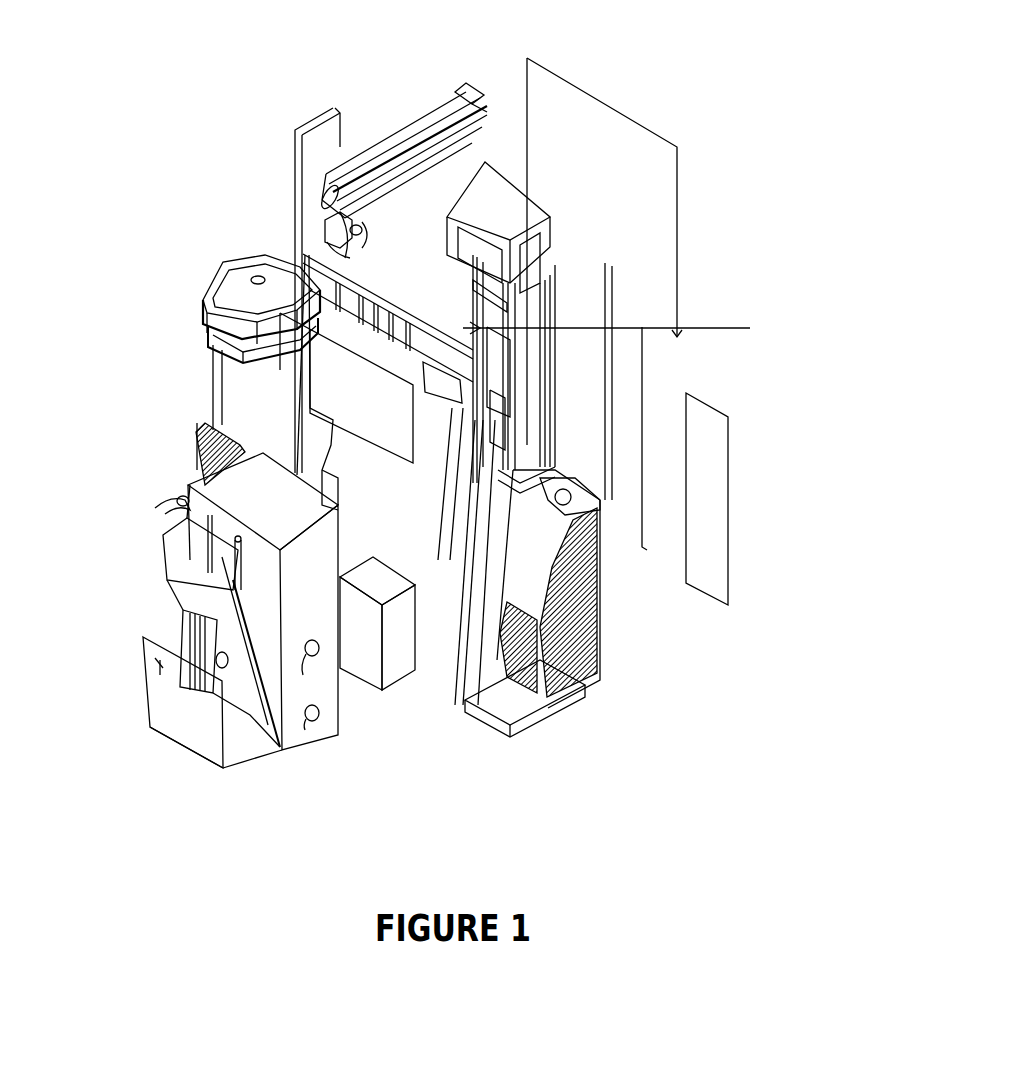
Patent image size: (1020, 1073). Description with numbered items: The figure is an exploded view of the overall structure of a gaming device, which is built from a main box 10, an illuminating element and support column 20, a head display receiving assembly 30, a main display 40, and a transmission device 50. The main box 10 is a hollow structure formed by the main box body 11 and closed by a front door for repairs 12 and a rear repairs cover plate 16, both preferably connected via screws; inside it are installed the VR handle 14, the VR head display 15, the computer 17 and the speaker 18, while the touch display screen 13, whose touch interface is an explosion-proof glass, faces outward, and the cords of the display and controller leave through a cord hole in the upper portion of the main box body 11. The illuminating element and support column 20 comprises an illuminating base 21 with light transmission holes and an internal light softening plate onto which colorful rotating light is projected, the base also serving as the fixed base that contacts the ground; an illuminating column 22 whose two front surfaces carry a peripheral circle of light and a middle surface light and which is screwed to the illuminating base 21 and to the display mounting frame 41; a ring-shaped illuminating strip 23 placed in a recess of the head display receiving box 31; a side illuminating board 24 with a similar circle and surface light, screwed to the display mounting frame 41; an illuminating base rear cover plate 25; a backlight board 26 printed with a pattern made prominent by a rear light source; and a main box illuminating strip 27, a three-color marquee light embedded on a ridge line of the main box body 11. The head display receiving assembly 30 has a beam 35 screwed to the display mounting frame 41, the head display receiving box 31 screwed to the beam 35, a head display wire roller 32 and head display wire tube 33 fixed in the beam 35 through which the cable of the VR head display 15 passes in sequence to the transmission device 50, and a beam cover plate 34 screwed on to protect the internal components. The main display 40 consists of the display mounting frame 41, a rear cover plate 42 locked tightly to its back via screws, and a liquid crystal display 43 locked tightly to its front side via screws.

The main box 10 is at (307, 556).
The main box body 11 is at (230, 742).
The front door for repairs 12 is at (163, 660).
The touch display screen 13 is at (152, 585).
The VR handle 14 is at (157, 506).
The VR head display 15 is at (340, 147).
The rear repairs cover plate 16 is at (648, 442).
The computer 17 is at (398, 688).
The speaker 18 is at (303, 672).
The illuminating element and support column 20 is at (584, 684).
The illuminating base 21 is at (192, 440).
The illuminating column 22 is at (294, 435).
The ring-shaped illuminating strip 23 is at (192, 320).
The side illuminating board 24 is at (290, 122).
The illuminating base rear cover plate 25 is at (742, 499).
The backlight board 26 is at (600, 636).
The main box illuminating strip 27 is at (270, 756).
The head display receiving assembly 30 is at (257, 253).
The head display receiving box 31 is at (213, 265).
The head display wire roller 32 is at (308, 196).
The head display wire tube 33 is at (391, 176).
The beam cover plate 34 is at (430, 103).
The beam 35 is at (489, 109).
The main display 40 is at (518, 212).
The display mounting frame 41 is at (507, 166).
The rear cover plate 42 is at (683, 163).
The liquid crystal display 43 is at (631, 338).
The transmission device 50 is at (499, 307).